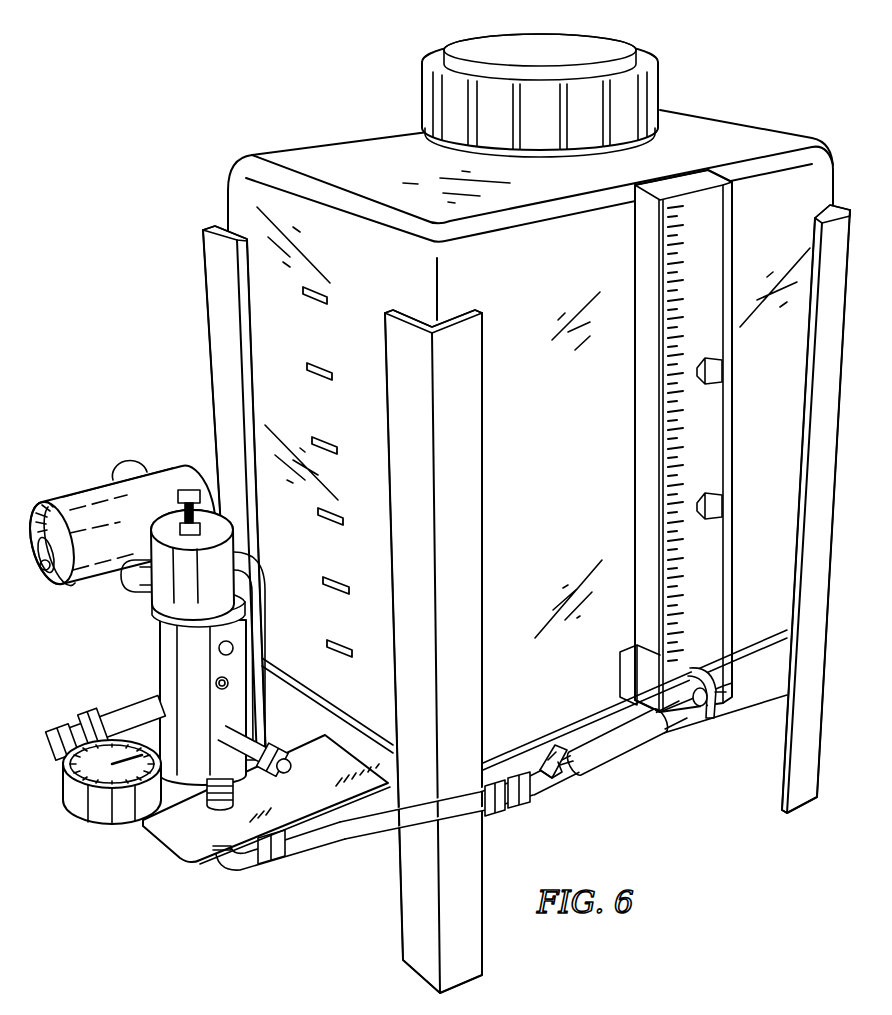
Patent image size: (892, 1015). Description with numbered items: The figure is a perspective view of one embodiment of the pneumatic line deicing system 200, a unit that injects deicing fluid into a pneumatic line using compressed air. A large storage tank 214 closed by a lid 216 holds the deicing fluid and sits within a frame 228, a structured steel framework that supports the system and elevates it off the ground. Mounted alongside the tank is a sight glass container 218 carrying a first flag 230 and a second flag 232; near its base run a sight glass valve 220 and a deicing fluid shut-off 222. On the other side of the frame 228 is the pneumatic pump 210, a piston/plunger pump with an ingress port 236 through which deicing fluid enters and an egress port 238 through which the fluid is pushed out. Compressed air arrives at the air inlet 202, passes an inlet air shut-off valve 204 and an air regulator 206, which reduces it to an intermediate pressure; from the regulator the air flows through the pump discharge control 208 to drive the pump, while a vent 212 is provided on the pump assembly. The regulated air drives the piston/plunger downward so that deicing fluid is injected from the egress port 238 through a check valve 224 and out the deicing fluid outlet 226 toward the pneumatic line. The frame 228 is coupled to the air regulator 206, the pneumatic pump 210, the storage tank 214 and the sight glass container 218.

The pneumatic line deicing system 200 is at (233, 93).
The air inlet 202 is at (58, 758).
The inlet air shut-off valve 204 is at (100, 704).
The air regulator 206 is at (165, 682).
The pump discharge control 208 is at (100, 487).
The pneumatic pump 210 is at (160, 630).
The vent 212 is at (126, 468).
The storage tank 214 is at (305, 153).
The lid 216 is at (548, 44).
The sight glass container 218 is at (710, 232).
The sight glass valve 220 is at (688, 706).
The deicing fluid shut-off 222 is at (584, 740).
The check valve 224 is at (270, 742).
The deicing fluid outlet 226 is at (285, 772).
The frame 228 is at (228, 327).
The first flag 230 is at (723, 374).
The second flag 232 is at (723, 508).
The ingress port 236 is at (200, 858).
The egress port 238 is at (262, 645).